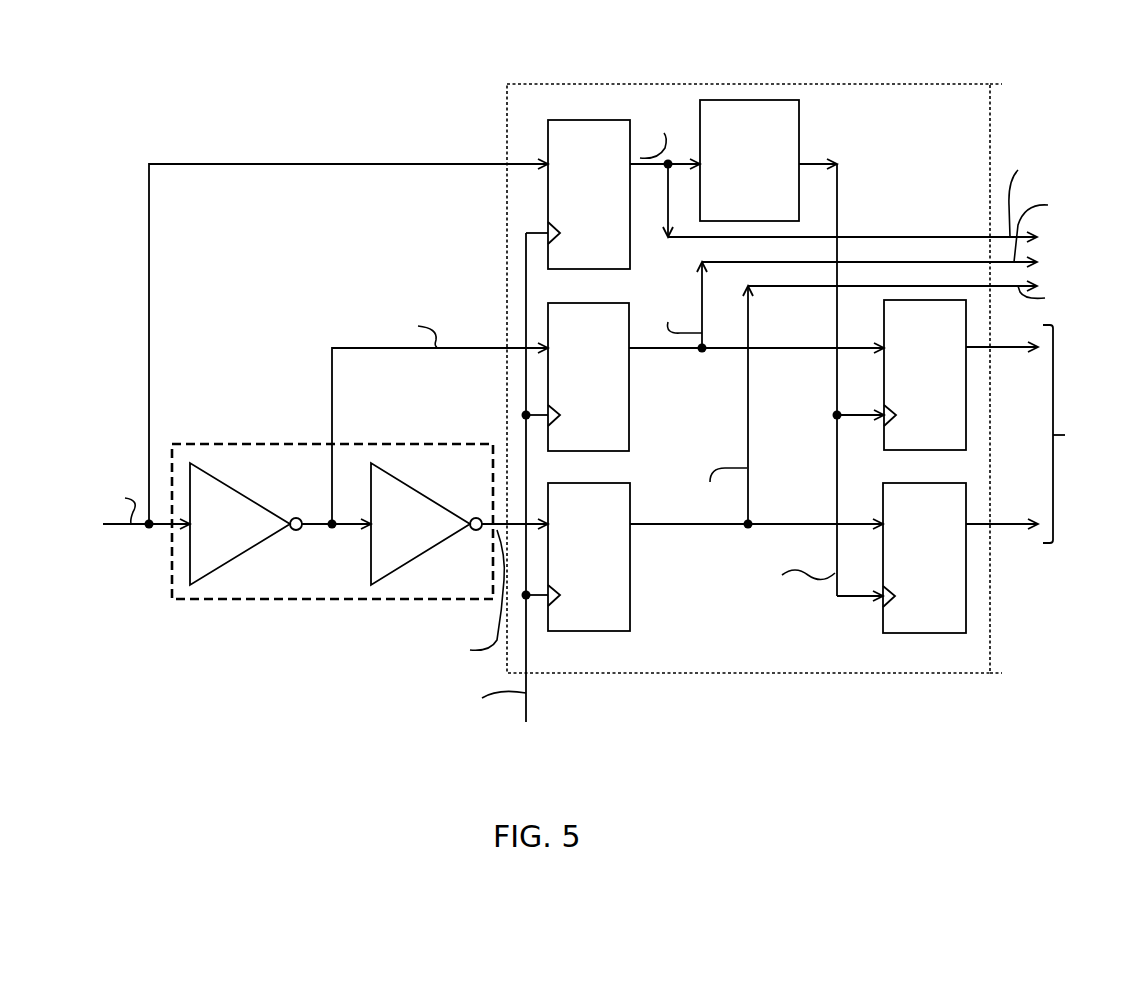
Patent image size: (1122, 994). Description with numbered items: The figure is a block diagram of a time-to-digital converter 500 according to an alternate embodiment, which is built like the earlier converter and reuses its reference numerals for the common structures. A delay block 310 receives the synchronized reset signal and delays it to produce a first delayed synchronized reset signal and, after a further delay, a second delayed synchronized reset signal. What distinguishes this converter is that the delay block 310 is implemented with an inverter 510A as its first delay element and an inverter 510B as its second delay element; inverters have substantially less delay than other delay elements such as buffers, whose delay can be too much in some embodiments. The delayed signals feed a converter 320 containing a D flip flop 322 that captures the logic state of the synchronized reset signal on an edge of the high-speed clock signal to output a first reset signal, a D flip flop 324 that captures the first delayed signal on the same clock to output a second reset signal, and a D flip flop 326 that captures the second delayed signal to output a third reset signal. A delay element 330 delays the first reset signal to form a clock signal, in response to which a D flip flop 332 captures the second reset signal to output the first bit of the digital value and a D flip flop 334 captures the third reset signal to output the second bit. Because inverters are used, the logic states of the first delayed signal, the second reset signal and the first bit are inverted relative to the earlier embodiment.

The time-to-digital converter 500 is at (247, 137).
The delay block 310 is at (306, 444).
The inverter 510A is at (241, 495).
The inverter 510B is at (420, 490).
The converter 320 is at (507, 137).
The D flip flop 322 is at (548, 196).
The D flip flop 324 is at (629, 420).
The D flip flop 326 is at (630, 600).
The delay element 330 is at (799, 113).
The D flip flop 332 is at (884, 437).
The D flip flop 334 is at (883, 622).